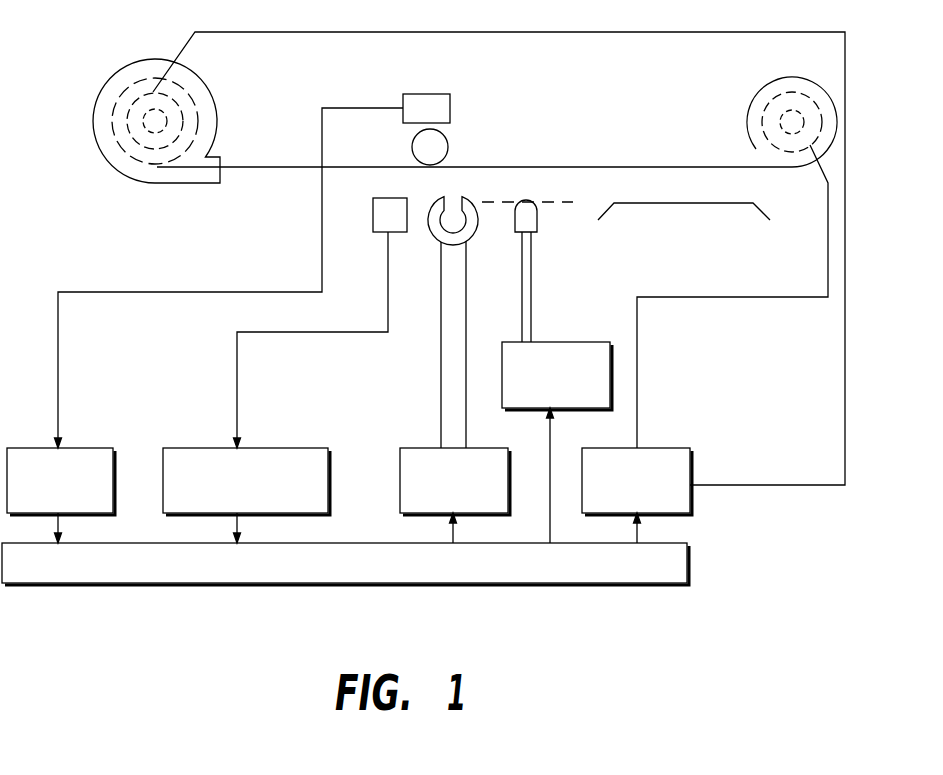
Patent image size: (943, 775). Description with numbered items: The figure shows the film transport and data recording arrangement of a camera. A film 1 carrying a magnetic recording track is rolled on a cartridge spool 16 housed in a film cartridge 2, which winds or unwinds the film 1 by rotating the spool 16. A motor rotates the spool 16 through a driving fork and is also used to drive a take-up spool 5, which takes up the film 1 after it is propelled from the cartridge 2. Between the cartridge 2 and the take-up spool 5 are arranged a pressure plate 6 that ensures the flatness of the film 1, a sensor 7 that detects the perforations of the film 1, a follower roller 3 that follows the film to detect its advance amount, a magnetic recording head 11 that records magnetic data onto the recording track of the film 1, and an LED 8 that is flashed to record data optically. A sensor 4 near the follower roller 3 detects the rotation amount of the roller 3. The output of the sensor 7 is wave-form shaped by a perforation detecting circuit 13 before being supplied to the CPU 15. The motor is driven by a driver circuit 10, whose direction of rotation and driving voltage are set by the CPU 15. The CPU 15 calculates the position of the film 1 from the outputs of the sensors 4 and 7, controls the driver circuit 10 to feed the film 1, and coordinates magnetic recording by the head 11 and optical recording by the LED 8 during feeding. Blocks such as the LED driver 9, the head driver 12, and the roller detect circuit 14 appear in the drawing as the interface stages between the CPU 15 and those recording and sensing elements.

The film 1 is at (213, 87).
The film cartridge 2 is at (117, 68).
The follower roller 3 is at (448, 143).
The sensor 4 is at (452, 108).
The take-up spool 5 is at (764, 97).
The pressure plate 6 is at (658, 203).
The sensor 7 is at (389, 198).
The LED 8 is at (537, 230).
The LED driver 9 is at (609, 342).
The driver circuit 10 is at (662, 447).
The magnetic recording head 11 is at (431, 215).
The head driver 12 is at (422, 447).
The perforation detecting circuit 13 is at (258, 447).
The roller detect circuit 14 is at (77, 446).
The CPU 15 is at (687, 563).
The cartridge spool 16 is at (100, 158).